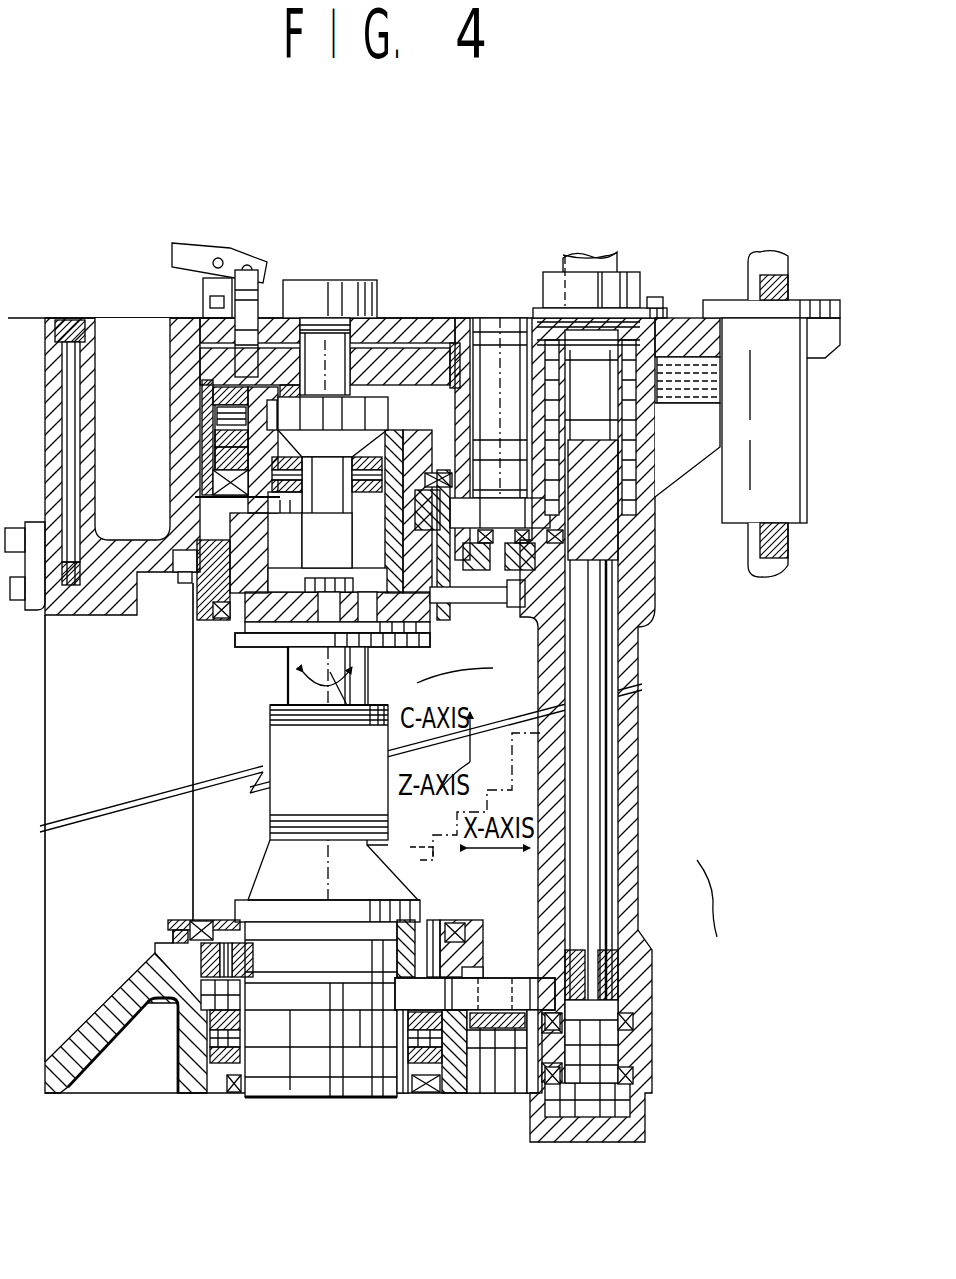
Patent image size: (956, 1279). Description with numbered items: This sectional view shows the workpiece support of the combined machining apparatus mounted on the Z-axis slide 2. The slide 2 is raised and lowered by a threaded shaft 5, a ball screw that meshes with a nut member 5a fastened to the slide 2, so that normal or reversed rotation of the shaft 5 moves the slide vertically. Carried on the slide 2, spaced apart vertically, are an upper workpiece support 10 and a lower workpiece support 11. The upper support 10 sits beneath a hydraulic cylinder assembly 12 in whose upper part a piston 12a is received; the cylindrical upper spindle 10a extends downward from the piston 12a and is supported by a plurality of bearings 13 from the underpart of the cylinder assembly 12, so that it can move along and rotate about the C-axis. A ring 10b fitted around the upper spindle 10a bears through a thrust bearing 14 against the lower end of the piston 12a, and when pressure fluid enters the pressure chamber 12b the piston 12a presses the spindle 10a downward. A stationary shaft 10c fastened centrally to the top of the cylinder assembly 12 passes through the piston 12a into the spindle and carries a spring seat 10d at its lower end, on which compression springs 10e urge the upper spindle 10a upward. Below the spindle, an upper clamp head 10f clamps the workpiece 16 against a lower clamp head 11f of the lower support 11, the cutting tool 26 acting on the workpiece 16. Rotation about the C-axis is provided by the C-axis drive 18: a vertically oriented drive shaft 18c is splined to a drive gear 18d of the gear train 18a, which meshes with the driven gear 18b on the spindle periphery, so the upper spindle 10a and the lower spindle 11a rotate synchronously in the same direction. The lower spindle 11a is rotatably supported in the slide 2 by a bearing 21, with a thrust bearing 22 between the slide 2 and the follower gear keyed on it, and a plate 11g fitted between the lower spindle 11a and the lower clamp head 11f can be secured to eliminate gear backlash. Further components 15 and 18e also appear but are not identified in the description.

The Z-axis slide 2 is at (68, 778).
The threaded shaft 5 is at (750, 282).
The nut member 5a is at (790, 487).
The upper workpiece support 10 is at (258, 665).
The upper spindle 10a is at (240, 486).
The ring 10b is at (405, 497).
The stationary shaft 10c is at (335, 353).
The spring seat 10d is at (283, 580).
The compression springs 10e is at (270, 498).
The upper clamp head 10f is at (372, 684).
The lower workpiece support 11 is at (183, 982).
The lower spindle 11a is at (215, 995).
The lower clamp head 11f is at (258, 878).
The plate 11g is at (321, 1009).
The hydraulic cylinder assembly 12 is at (178, 402).
The piston 12a is at (418, 347).
The pressure chamber 12b is at (448, 342).
The bearings 13 is at (212, 458).
The thrust bearing 14 is at (425, 440).
The spindle bearing 15 is at (272, 478).
The workpiece 16 is at (287, 737).
The C-axis drive 18 is at (640, 780).
The gear train 18a is at (591, 802).
The driven gear 18b is at (545, 525).
The drive shaft 18c is at (598, 820).
The drive gear 18d is at (478, 600).
The nut fastening bolt 18e is at (505, 592).
The bearing 21 is at (205, 920).
The thrust bearing 22 is at (215, 1038).
The cutting tool 26 is at (385, 868).